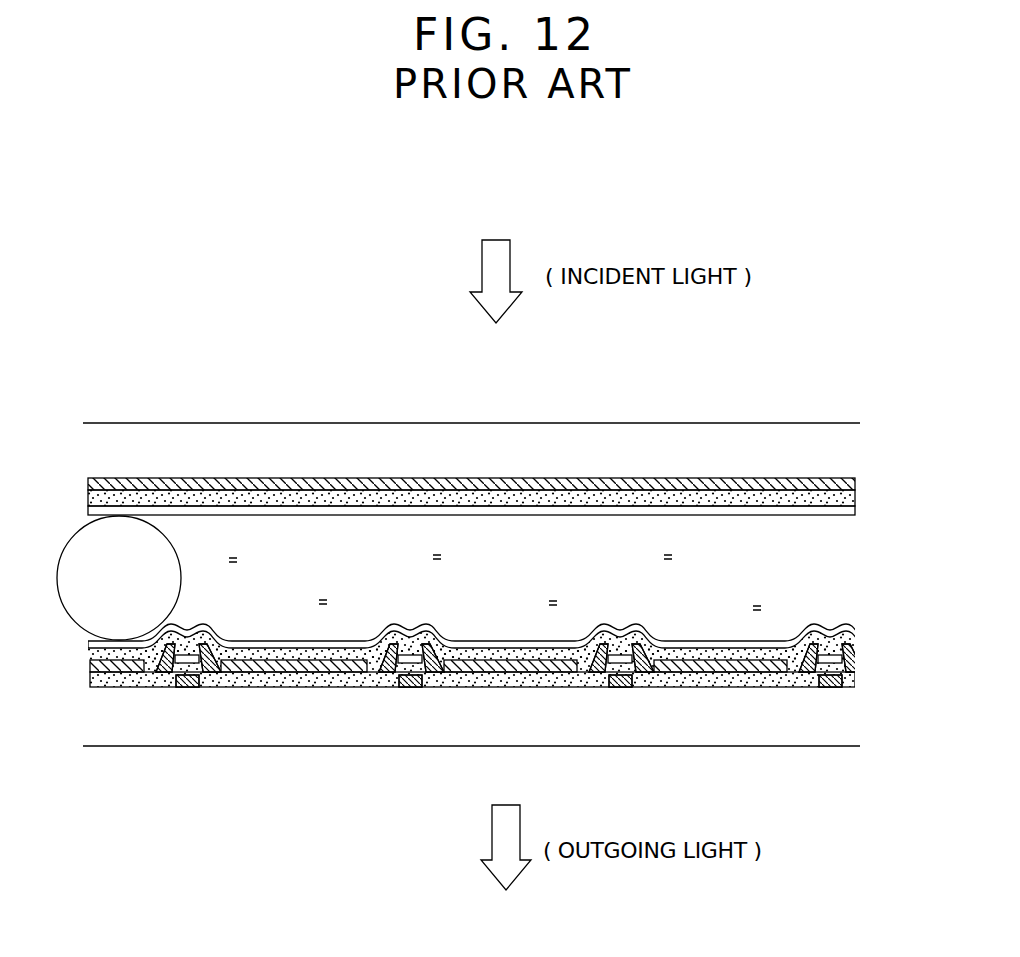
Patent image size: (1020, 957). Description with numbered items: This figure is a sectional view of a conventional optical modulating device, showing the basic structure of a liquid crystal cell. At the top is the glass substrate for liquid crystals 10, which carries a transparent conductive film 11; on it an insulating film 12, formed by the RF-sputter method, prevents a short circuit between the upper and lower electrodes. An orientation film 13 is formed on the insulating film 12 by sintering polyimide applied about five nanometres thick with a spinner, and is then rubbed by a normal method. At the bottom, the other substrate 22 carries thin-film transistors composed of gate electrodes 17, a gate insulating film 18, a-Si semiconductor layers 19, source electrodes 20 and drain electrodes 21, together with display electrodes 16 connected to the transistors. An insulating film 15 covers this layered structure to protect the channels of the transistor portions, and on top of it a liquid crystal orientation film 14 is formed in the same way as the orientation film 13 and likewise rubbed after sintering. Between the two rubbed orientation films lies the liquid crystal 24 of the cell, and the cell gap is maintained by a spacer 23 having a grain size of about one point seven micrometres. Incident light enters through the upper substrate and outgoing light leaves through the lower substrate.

The glass substrate for liquid crystals 10 is at (812, 452).
The transparent conductive film 11 is at (838, 482).
The insulating film 12 is at (843, 500).
The orientation film 13 is at (835, 513).
The liquid crystal orientation film 14 is at (833, 628).
The insulating film 15 is at (848, 650).
The display electrodes 16 is at (780, 682).
The gate electrodes 17 is at (625, 686).
The gate insulating film 18 is at (585, 683).
The a-Si semiconductor layers 19 is at (640, 684).
The source electrodes 20 is at (614, 684).
The drain electrodes 21 is at (663, 687).
The other substrate 22 is at (475, 720).
The spacer 23 is at (153, 547).
The liquid crystal layer 24 is at (368, 543).